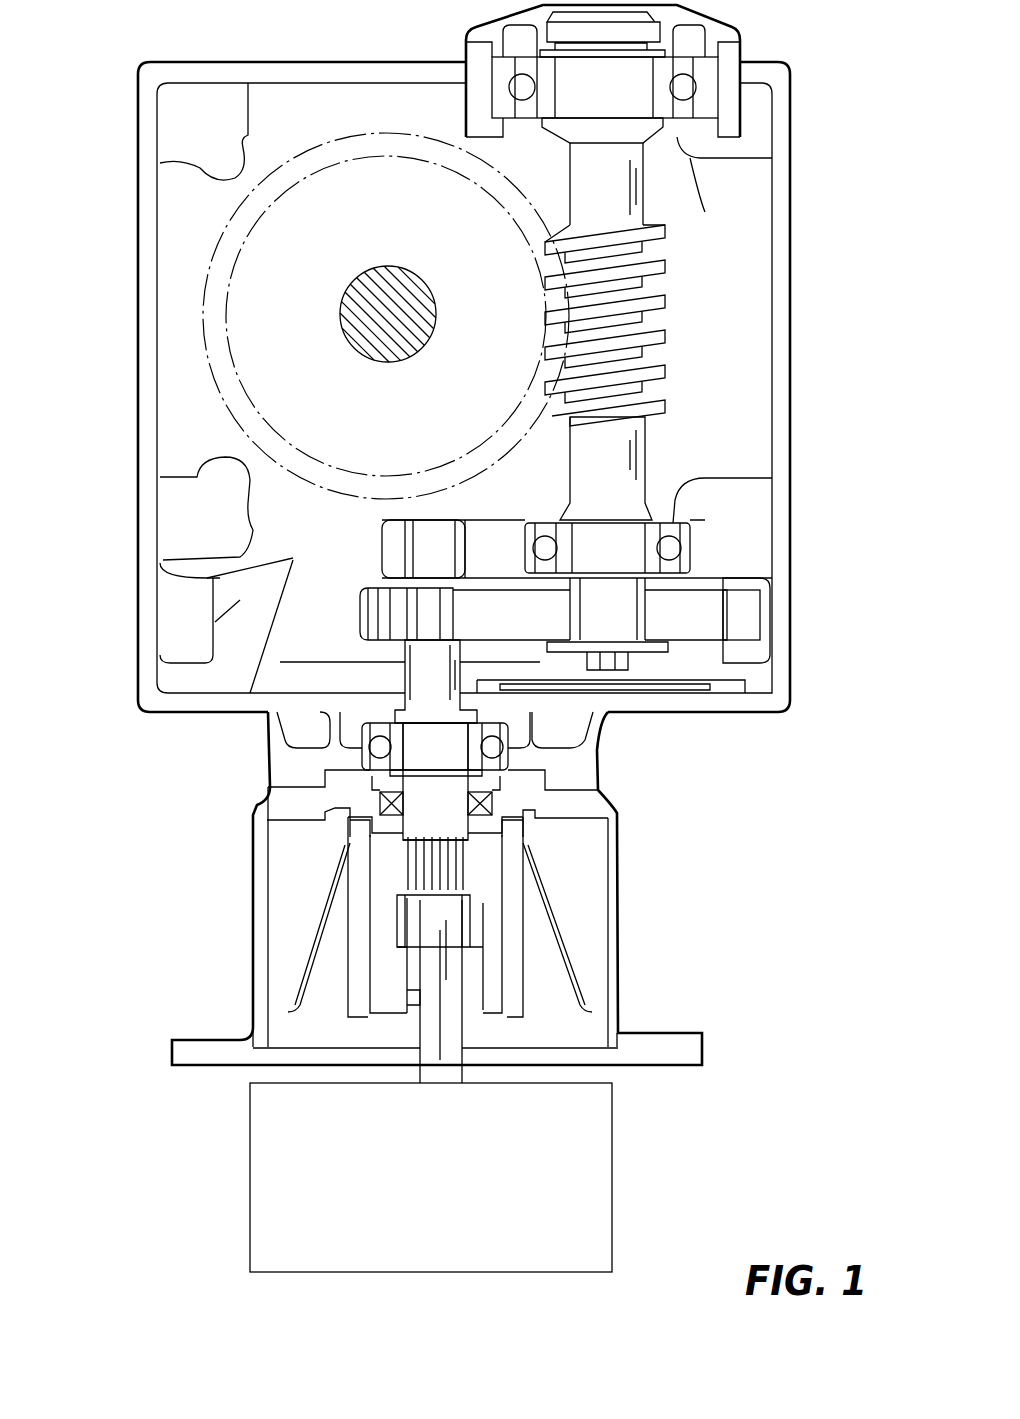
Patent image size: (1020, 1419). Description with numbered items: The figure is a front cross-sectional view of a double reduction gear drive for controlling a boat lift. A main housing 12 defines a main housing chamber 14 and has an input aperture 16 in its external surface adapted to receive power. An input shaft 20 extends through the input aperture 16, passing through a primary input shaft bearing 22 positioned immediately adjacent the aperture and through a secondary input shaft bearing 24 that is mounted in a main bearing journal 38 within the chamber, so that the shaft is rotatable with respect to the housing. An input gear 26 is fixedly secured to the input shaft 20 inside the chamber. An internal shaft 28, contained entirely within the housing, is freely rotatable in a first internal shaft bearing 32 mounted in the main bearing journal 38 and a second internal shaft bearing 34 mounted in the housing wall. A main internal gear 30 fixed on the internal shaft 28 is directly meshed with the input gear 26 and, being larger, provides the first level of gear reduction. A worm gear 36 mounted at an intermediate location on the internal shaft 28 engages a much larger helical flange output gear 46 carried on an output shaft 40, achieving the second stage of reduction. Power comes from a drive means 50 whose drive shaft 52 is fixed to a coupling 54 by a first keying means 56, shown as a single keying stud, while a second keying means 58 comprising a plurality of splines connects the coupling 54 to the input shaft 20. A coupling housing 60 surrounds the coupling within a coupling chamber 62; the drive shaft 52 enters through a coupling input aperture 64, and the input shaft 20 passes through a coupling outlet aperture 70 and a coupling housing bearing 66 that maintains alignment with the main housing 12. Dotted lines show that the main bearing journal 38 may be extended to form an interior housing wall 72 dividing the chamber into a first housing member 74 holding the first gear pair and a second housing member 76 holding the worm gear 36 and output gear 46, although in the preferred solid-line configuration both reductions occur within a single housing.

The main housing 12 is at (781, 268).
The main housing chamber 14 is at (208, 434).
The input aperture 16 is at (365, 618).
The input shaft 20 is at (450, 680).
The primary input shaft bearing 22 is at (503, 740).
The secondary input shaft bearing 24 is at (408, 535).
The input gear 26 is at (293, 560).
The internal shaft 28 is at (624, 463).
The main internal gear 30 is at (502, 610).
The first internal shaft bearing 32 is at (687, 557).
The second internal shaft bearing 34 is at (707, 77).
The worm gear 36 is at (665, 348).
The main bearing journal 38 is at (495, 540).
The output shaft 40 is at (353, 290).
The output gear 46 is at (242, 268).
The drive means 50 is at (569, 1149).
The drive shaft 52 is at (443, 995).
The coupling 54 is at (493, 865).
The first keying means 56 is at (415, 977).
The second keying means 58 is at (423, 867).
The coupling housing 60 is at (618, 1010).
The coupling chamber 62 is at (312, 909).
The coupling input aperture 64 is at (460, 1055).
The coupling housing bearing 66 is at (490, 805).
The coupling outlet aperture 70 is at (492, 778).
The interior housing wall 72 is at (215, 622).
The first housing member 74 is at (207, 578).
The second housing member 76 is at (705, 212).